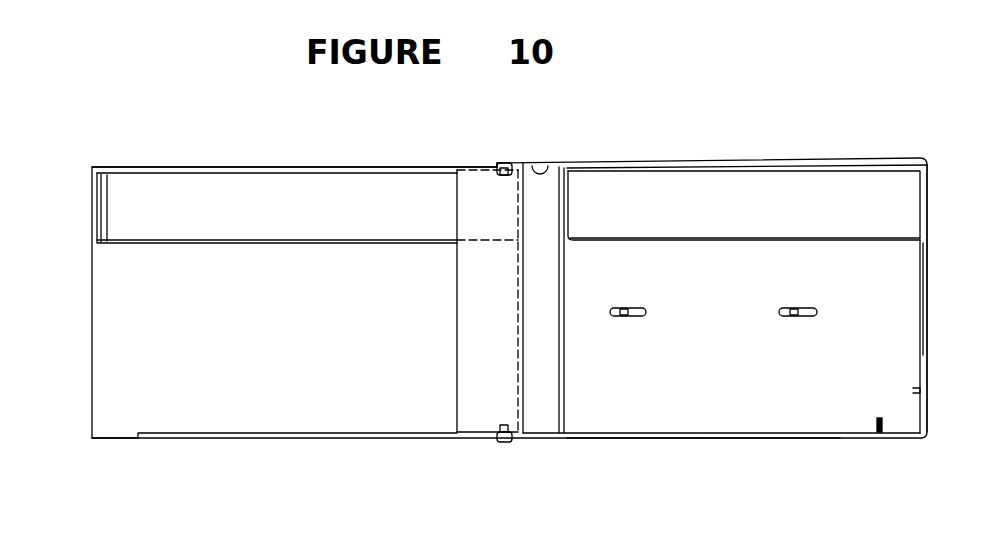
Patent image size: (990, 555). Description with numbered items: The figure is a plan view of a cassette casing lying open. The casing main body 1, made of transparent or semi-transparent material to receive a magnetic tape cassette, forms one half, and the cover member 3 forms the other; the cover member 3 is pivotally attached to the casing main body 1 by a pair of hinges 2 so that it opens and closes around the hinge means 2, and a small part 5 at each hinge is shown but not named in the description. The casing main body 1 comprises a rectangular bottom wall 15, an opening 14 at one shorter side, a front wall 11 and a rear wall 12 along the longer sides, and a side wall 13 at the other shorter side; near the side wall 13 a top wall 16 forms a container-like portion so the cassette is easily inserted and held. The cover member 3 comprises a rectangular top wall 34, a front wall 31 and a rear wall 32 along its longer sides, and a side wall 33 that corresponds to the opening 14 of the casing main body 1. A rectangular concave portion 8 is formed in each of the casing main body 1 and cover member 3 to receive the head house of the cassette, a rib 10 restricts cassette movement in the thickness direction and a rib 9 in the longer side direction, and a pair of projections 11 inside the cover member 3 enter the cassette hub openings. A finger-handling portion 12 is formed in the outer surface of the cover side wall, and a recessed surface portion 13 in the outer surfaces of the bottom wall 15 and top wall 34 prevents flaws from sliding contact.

The casing main body 1 is at (76, 470).
The hinge means 2 is at (506, 163).
The cover member 3 is at (690, 507).
The hinge pin 5 is at (504, 178).
The rectangular concave portion 8 is at (328, 244).
The rib 9 is at (911, 390).
The rib 10 is at (875, 432).
The front wall 11 is at (330, 167).
The rear wall 12 is at (318, 440).
The side wall 13 is at (524, 296).
The opening 14 is at (136, 404).
The bottom wall 15 is at (92, 362).
The top wall 16 is at (457, 356).
The front wall 31 is at (762, 438).
The rear wall 32 is at (544, 164).
The side wall 33 is at (928, 384).
The top wall 34 is at (648, 406).